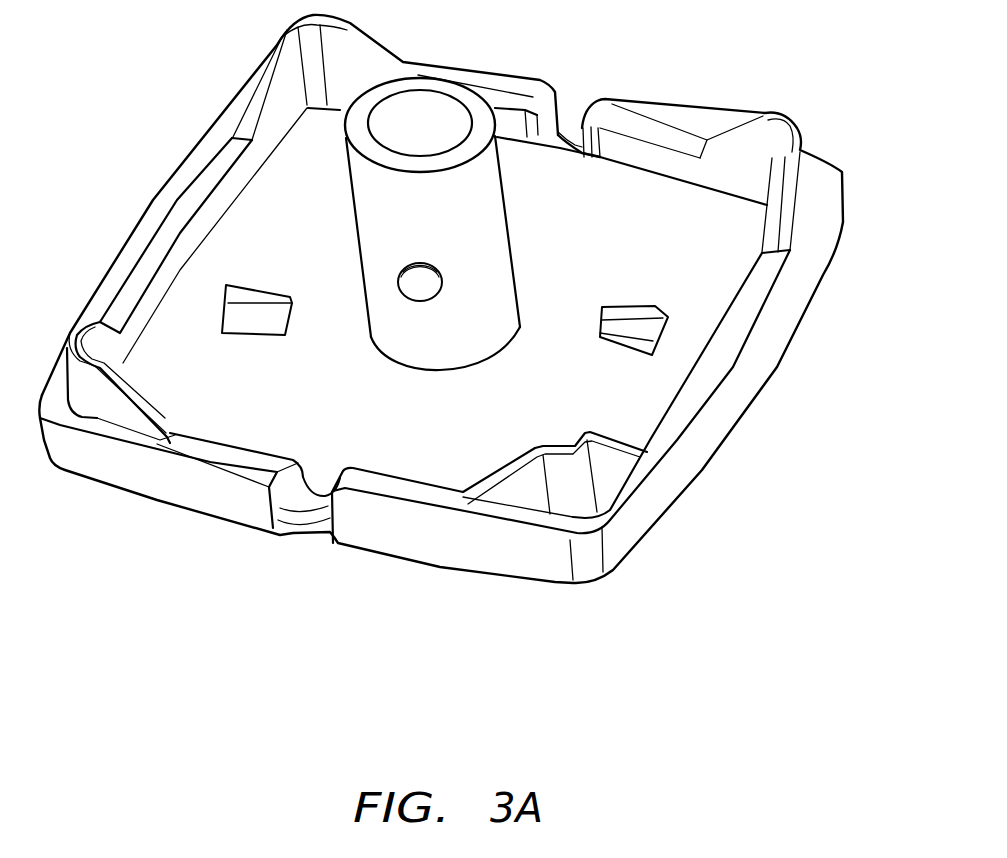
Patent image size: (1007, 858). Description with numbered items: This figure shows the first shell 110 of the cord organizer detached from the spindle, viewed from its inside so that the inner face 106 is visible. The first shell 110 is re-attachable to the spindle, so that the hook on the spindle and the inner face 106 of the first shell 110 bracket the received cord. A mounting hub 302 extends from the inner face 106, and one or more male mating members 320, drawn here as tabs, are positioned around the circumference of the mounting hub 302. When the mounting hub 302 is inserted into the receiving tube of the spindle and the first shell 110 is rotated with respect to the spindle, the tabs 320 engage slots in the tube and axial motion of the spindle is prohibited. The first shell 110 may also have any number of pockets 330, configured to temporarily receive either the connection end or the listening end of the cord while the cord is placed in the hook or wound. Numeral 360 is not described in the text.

The first shell 110 is at (708, 108).
The inner face 106 is at (645, 256).
The mounting hub 302 is at (437, 90).
The male mating members 320 is at (422, 287).
The pockets 330 is at (308, 510).
The wedge-shaped block 360 is at (665, 320).